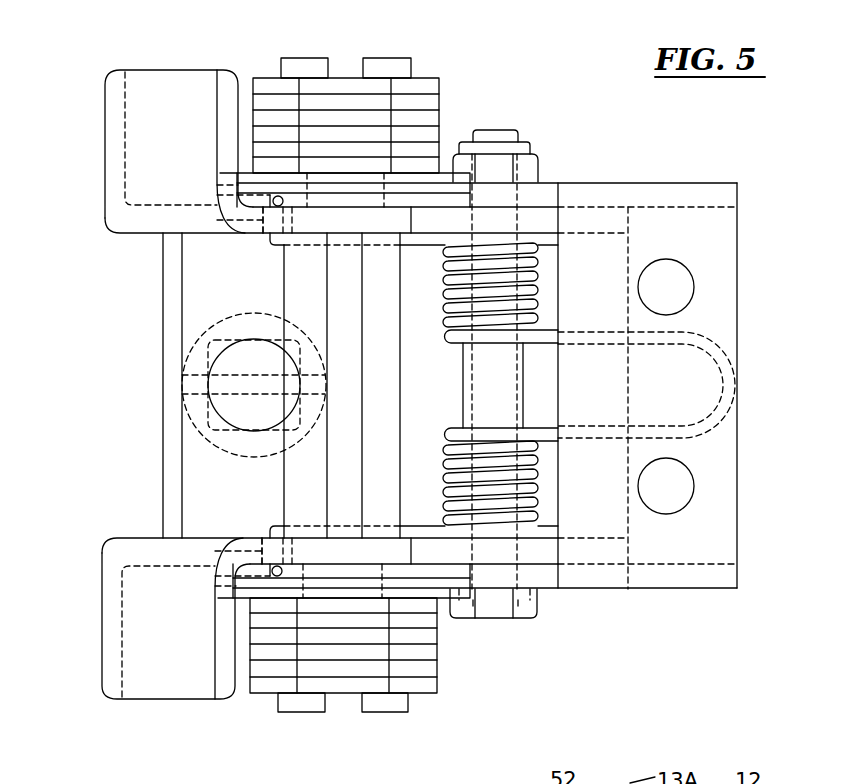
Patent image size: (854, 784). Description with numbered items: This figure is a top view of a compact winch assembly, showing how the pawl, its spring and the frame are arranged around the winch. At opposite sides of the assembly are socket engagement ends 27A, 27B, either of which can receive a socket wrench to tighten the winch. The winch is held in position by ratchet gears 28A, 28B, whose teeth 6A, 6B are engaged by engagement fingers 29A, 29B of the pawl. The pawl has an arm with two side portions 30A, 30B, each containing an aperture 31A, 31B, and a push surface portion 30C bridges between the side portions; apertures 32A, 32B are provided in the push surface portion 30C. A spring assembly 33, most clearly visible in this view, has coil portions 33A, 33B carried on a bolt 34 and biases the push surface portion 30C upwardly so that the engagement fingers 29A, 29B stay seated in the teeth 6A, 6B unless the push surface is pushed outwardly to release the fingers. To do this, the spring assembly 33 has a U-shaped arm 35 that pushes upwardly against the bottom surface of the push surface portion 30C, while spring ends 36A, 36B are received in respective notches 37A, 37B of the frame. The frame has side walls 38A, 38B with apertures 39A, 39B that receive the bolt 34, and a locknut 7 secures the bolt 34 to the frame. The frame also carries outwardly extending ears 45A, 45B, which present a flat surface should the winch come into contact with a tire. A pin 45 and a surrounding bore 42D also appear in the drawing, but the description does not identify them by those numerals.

The outwardly extending ear 45B is at (172, 110).
The outwardly extending ear 45A is at (158, 670).
The pivot bore 42D is at (233, 318).
The pivot pin 45 is at (248, 393).
The coil portion 33B is at (445, 308).
The coil portion 33A is at (445, 470).
The ratchet gear 28B is at (252, 188).
The ratchet gear 28A is at (275, 588).
The teeth 6B is at (357, 193).
The teeth 6A is at (333, 580).
The socket engagement end 27B is at (440, 120).
The socket engagement end 27A is at (437, 670).
The spring end 36B is at (278, 200).
The spring end 36A is at (295, 520).
The notch 37B is at (217, 220).
The notch 37A is at (262, 545).
The engagement finger 29B is at (447, 178).
The engagement finger 29A is at (488, 575).
The locknut 7 is at (490, 165).
The aperture 31B is at (517, 190).
The aperture 31A is at (513, 577).
The aperture 39B is at (523, 220).
The aperture 39A is at (520, 553).
The bolt 34 is at (493, 624).
The side wall 38B is at (540, 290).
The side wall 38A is at (430, 552).
The spring assembly 33 is at (431, 442).
The arm side portion 30B is at (660, 198).
The arm side portion 30A is at (628, 589).
The push surface portion 30C is at (720, 463).
The aperture 32B is at (683, 288).
The aperture 32A is at (683, 483).
The U-shaped arm 35 is at (587, 442).